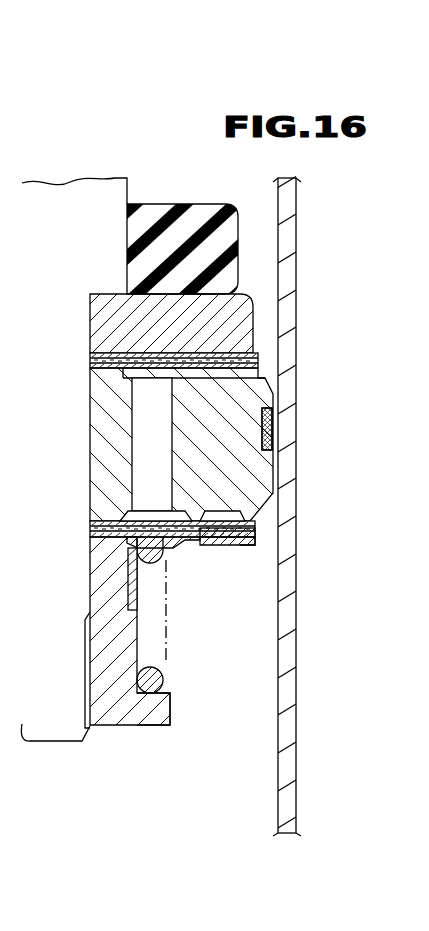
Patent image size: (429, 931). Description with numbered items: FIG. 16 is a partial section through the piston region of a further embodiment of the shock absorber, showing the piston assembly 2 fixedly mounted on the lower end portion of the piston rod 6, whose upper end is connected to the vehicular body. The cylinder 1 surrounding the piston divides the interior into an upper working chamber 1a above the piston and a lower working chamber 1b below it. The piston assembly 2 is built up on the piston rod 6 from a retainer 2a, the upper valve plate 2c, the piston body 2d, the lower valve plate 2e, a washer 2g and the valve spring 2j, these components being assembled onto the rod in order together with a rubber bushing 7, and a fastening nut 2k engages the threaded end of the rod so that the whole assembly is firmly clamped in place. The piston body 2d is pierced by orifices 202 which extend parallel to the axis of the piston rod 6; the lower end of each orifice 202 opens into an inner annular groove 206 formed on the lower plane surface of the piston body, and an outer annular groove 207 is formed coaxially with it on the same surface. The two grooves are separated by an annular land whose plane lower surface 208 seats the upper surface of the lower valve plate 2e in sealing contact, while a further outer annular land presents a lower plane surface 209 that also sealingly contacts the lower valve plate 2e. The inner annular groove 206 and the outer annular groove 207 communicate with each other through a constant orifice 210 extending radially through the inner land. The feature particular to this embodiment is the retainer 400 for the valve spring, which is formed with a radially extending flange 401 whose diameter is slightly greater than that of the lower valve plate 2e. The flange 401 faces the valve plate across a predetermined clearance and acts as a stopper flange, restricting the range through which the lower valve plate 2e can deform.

The plate 1 is at (297, 264).
The upper working chamber 1a is at (256, 189).
The lower working chamber 1b is at (167, 795).
The piston assembly 2 is at (266, 374).
The retainer 2a is at (106, 314).
The upper valve plate 2c is at (256, 362).
The piston body 2d is at (254, 400).
The lower valve plate 2e is at (92, 519).
The washer 2g is at (96, 539).
The valve spring 2j is at (166, 681).
The fastening nut 2k is at (156, 727).
The piston rod 6 is at (131, 190).
The rubber bushing 7 is at (158, 214).
The orifice 202 is at (160, 409).
The inner annular groove 206 is at (188, 518).
The outer annular groove 207 is at (249, 520).
The plane lower surface 208 is at (198, 542).
The lower plane surface 209 is at (254, 532).
The constant orifice 210 is at (226, 514).
The retainer 400 is at (187, 552).
The flange 401 is at (255, 540).